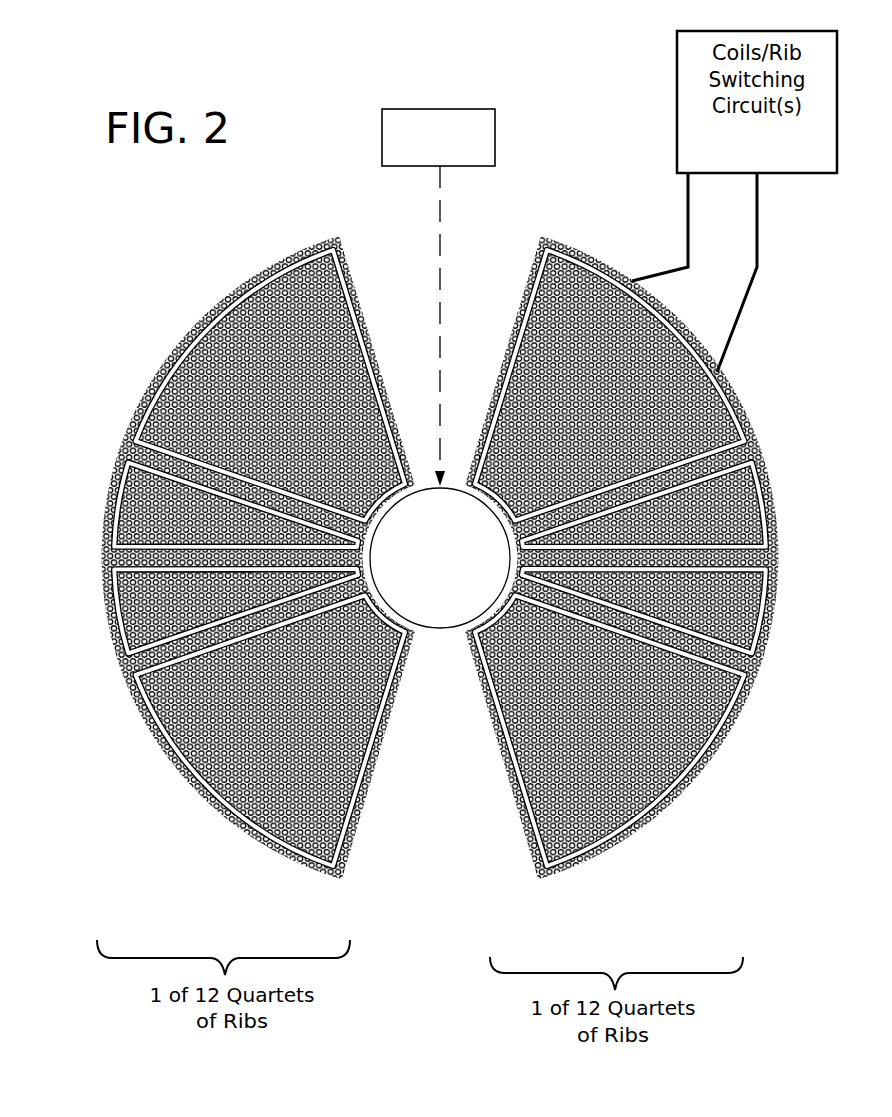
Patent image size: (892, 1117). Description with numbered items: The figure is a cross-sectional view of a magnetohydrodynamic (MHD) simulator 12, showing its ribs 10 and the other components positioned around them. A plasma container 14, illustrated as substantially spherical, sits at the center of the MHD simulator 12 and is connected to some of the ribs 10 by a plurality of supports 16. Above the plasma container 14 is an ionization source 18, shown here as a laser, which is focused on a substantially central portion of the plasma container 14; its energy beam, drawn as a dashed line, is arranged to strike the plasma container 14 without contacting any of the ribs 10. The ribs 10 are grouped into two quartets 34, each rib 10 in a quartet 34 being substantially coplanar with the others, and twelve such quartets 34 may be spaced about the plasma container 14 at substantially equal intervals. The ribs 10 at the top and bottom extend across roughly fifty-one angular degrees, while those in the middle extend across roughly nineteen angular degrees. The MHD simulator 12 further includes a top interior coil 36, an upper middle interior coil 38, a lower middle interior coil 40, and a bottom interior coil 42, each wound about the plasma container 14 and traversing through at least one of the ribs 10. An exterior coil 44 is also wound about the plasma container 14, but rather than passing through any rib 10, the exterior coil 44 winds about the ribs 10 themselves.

The rib 10 is at (323, 243).
The magnetohydrodynamic (MHD) simulator 12 is at (160, 288).
The plasma container 14 is at (429, 571).
The supports 16 is at (429, 541).
The ionization source 18 is at (495, 110).
The quartet of ribs 34 is at (107, 605).
The top interior coil 36 is at (233, 343).
The upper middle interior coil 38 is at (137, 493).
The lower middle interior coil 40 is at (747, 623).
The bottom interior coil 42 is at (223, 805).
The exterior coil 44 is at (252, 280).